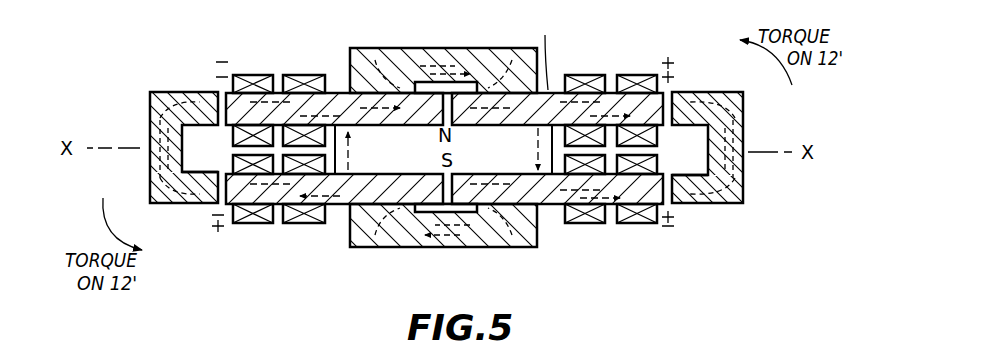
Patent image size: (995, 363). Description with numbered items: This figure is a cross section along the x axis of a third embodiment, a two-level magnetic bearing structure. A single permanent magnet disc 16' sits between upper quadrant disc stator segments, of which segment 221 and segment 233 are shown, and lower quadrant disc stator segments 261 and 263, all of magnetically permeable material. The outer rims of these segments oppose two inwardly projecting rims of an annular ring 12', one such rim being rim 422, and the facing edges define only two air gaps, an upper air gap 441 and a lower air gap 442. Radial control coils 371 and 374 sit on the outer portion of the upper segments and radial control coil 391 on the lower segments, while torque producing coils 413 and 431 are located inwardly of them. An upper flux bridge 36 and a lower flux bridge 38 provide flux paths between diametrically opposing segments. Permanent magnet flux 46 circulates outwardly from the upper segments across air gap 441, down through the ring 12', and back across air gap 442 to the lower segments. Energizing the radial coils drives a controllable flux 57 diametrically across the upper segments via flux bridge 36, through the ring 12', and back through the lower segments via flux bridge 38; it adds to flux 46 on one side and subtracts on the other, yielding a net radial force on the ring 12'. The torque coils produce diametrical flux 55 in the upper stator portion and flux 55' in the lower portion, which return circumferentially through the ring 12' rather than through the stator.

The annular ring 12' is at (465, 166).
The flux path 55 is at (474, 87).
The flux path 55' is at (471, 209).
The flux path 57 is at (170, 123).
The air gap 441 is at (293, 75).
The air gap 442 is at (222, 203).
The inwardly projecting rim 422 is at (701, 205).
The radial control coil 371 is at (248, 75).
The radial control coil 374 is at (633, 75).
The radial control coil 391 is at (242, 224).
The torque producing coil 431 is at (293, 224).
The torque producing coil 413 is at (573, 75).
The upper quadrant disc stator segment 221 is at (338, 93).
The upper pole bar right section 233 is at (522, 133).
The lower quadrant disc stator segment 261 is at (343, 206).
The lower quadrant disc stator segment 263 is at (557, 207).
The upper flux bridge 36 is at (393, 52).
The lower flux bridge 38 is at (518, 235).
The permanent magnet disc 16' is at (538, 53).
The permanent magnet flux 46 is at (538, 156).